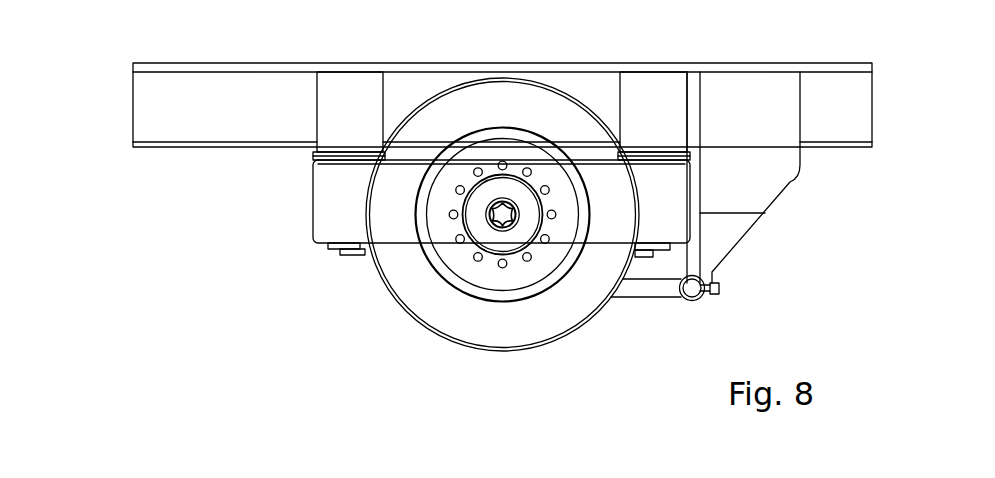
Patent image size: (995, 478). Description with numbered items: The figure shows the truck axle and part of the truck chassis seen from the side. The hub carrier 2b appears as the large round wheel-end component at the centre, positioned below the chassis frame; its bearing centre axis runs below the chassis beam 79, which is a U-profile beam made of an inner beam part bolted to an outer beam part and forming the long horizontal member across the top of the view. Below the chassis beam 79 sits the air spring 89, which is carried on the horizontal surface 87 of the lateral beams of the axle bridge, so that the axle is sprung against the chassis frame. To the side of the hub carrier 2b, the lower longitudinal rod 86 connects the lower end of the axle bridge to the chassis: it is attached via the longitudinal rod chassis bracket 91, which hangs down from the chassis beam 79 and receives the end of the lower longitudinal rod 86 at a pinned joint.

The chassis beam 79 is at (188, 125).
The air spring 89 is at (340, 200).
The horizontal surface 87 is at (357, 253).
The hub carrier 2b is at (497, 225).
The longitudinal rod chassis bracket 91 is at (767, 167).
The lower longitudinal rod 86 is at (660, 288).